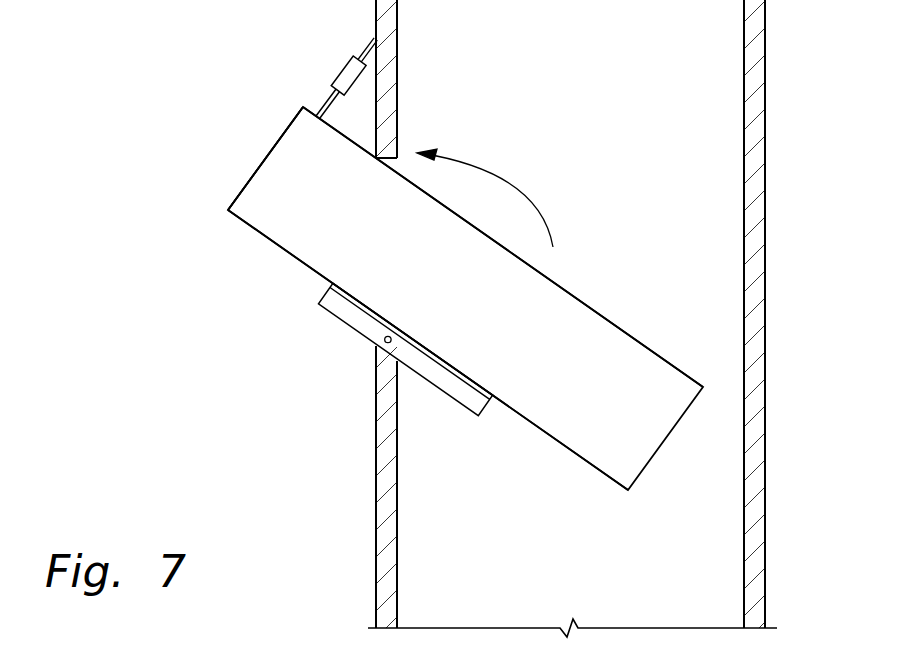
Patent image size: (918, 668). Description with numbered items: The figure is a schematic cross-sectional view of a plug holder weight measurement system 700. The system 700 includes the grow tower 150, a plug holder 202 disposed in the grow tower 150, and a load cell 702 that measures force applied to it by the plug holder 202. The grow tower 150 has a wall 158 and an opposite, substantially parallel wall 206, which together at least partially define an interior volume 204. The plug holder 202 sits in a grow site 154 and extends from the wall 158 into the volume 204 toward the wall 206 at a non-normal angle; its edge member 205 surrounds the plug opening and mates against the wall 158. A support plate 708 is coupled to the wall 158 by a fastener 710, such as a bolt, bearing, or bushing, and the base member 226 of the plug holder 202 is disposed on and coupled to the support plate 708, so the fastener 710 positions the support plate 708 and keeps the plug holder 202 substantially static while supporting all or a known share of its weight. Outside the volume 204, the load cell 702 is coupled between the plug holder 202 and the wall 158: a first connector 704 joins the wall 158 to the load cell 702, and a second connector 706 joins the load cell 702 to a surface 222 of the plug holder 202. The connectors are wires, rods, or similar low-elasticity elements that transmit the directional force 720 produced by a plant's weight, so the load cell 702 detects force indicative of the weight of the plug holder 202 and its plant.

The grow tower 150 is at (784, 191).
The grow sites 154 is at (276, 259).
The wall 158 is at (376, 552).
The plug holder 202 is at (465, 298).
The interior volume 204 is at (531, 60).
The edge member 205 is at (268, 153).
The wall 206 is at (744, 58).
The surfaces 222 is at (603, 316).
The base member 226 is at (593, 467).
The plug holder weight measurement system 700 is at (192, 464).
The load cell 702 is at (342, 72).
The first connector 704 is at (374, 39).
The second connector 706 is at (320, 115).
The support plate 708 is at (463, 395).
The fastener 710 is at (384, 341).
The directional force 720 is at (493, 180).